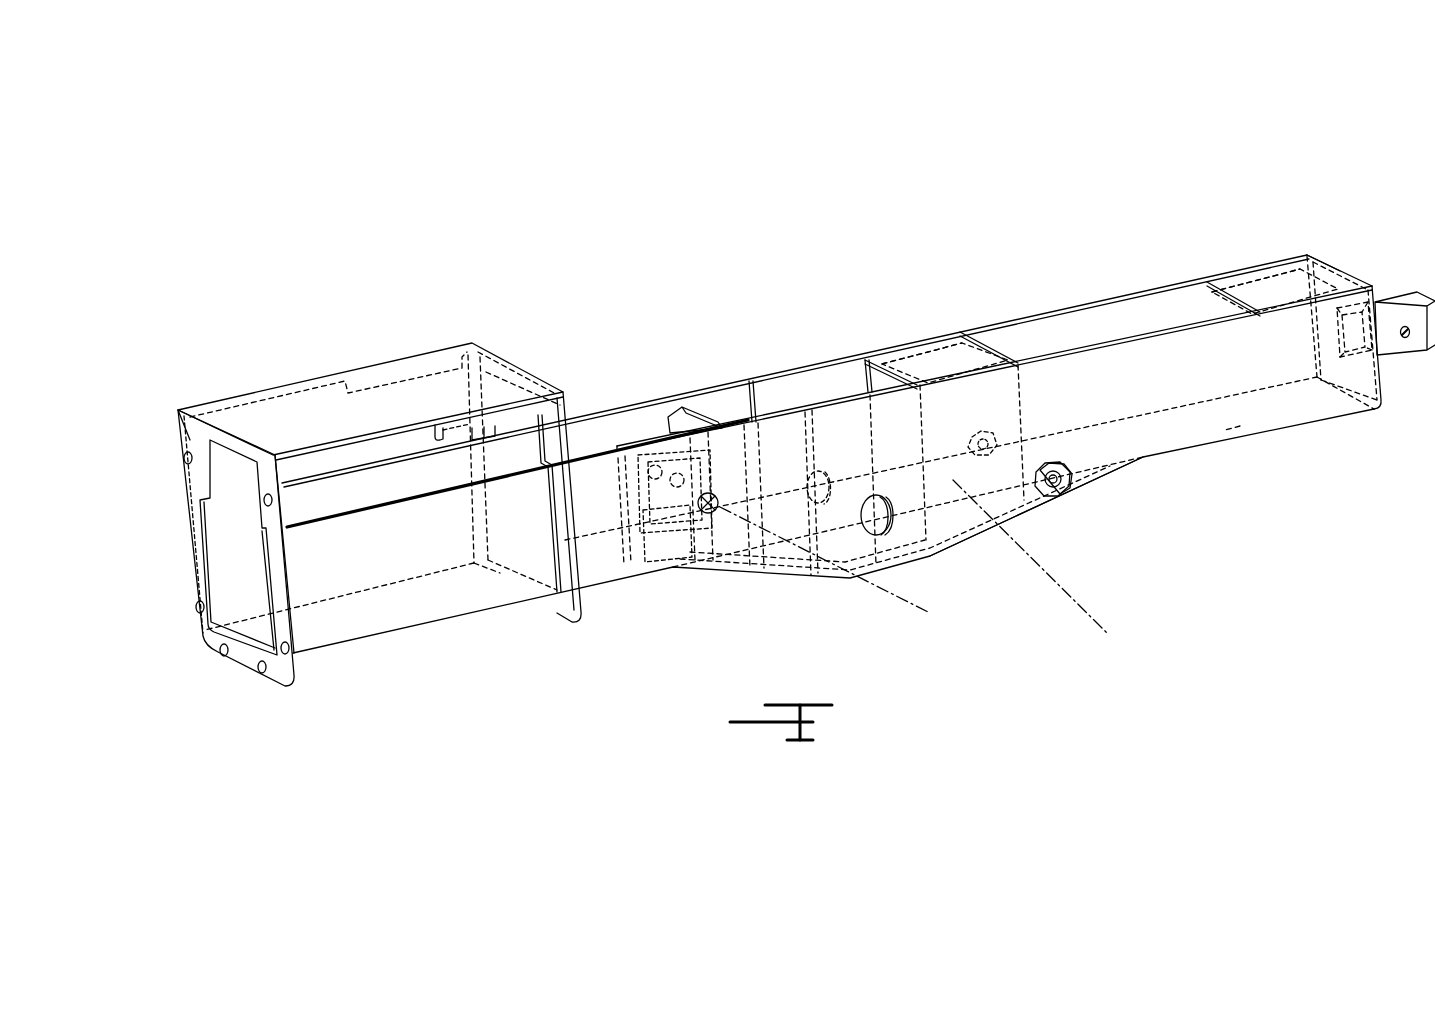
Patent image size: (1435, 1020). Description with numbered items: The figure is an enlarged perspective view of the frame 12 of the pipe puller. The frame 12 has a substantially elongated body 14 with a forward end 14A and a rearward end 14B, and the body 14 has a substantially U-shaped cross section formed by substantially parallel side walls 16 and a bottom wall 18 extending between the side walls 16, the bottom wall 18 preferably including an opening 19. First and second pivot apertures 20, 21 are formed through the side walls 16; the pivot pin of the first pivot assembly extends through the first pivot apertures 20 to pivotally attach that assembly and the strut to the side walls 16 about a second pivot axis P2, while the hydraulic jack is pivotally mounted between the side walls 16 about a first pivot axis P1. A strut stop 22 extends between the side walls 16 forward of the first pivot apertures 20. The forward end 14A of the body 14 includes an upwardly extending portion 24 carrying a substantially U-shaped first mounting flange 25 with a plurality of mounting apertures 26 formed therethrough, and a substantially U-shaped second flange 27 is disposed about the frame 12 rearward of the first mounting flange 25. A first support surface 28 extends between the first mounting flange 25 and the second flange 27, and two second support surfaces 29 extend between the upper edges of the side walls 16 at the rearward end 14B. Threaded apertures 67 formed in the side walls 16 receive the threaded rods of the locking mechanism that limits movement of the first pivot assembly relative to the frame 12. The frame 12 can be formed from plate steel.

The frame 12 is at (452, 140).
The elongated body 14 is at (1009, 314).
The forward end 14A is at (203, 398).
The rearward end 14B is at (1307, 254).
The side walls 16 is at (1097, 308).
The bottom wall 18 is at (1232, 425).
The opening 19 is at (995, 498).
The first pivot apertures 20 is at (889, 509).
The second pivot apertures 21 is at (708, 513).
The strut stop 22 is at (679, 412).
The upwardly extending portion 24 is at (400, 355).
The first mounting flange 25 is at (276, 683).
The mounting apertures 26 is at (186, 462).
The second flange 27 is at (558, 612).
The first support surface 28 is at (277, 435).
The second support surface 29 is at (922, 353).
The threaded apertures 67 is at (984, 440).
The first pivot axis P1 is at (935, 607).
The second pivot axis P2 is at (1037, 597).